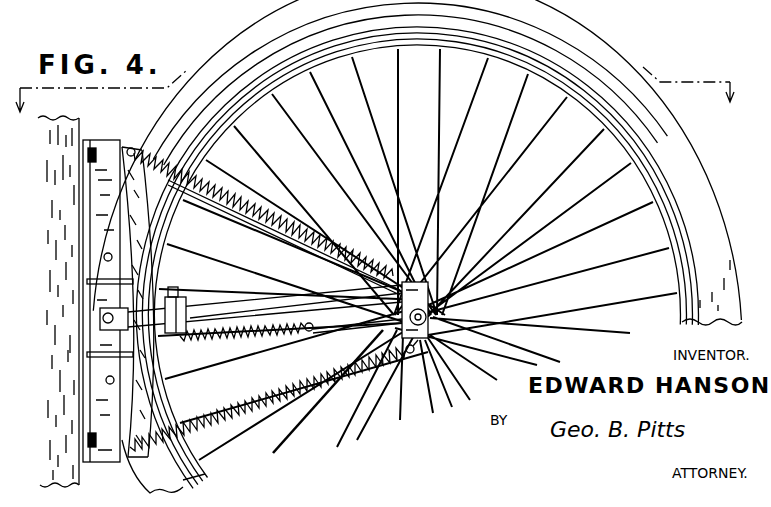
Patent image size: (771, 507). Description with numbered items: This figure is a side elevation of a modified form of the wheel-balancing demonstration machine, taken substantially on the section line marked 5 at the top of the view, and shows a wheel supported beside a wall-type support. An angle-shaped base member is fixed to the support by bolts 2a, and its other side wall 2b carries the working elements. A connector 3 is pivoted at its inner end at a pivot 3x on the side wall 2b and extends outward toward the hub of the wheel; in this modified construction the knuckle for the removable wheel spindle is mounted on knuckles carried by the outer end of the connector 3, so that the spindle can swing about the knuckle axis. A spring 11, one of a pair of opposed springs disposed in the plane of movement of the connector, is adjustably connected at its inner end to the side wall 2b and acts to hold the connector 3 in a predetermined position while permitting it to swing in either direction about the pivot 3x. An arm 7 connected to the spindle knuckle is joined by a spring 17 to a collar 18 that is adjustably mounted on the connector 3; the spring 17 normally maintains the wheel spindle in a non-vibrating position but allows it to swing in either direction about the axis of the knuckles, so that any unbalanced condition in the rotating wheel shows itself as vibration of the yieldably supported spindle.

The bolts 2a is at (78, 196).
The side wall 2b is at (112, 152).
The connector 3 is at (276, 300).
The pivot 3x is at (100, 320).
The bracket 5 is at (374, 98).
The arm 7 is at (350, 331).
The spring 11 is at (224, 207).
The spring 17 is at (214, 346).
The collar 18 is at (183, 312).